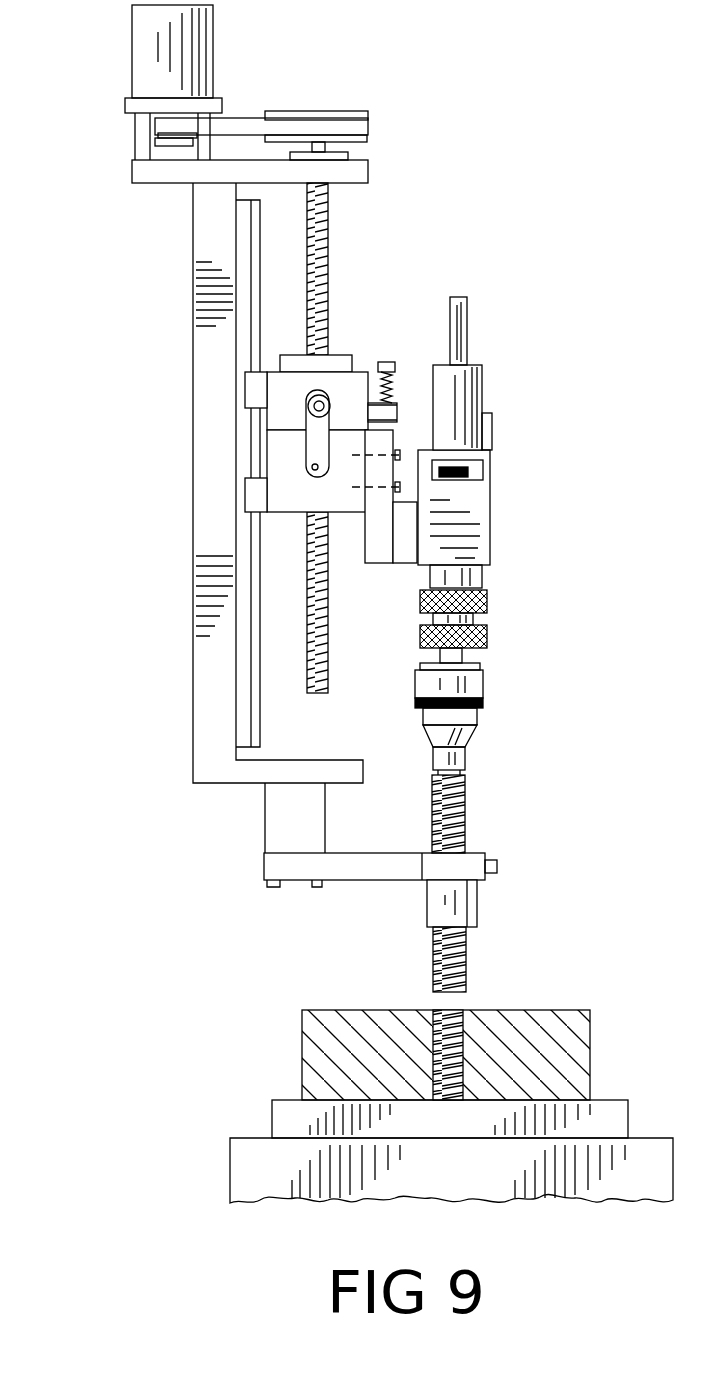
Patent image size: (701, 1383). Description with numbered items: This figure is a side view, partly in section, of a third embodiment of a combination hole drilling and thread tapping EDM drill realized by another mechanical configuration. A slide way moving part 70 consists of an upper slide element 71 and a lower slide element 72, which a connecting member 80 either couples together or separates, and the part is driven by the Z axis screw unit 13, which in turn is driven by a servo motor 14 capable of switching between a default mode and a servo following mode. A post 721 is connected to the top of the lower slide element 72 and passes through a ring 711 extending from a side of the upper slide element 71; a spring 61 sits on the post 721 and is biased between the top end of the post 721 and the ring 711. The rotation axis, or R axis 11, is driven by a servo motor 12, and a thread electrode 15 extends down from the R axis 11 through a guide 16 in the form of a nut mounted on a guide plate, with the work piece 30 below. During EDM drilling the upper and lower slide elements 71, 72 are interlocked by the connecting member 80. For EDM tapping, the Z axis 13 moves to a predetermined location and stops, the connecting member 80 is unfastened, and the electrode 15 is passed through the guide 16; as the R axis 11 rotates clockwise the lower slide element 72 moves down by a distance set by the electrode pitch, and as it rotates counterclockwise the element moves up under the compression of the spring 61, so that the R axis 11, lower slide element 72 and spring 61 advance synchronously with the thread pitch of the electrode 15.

The rotation axis 11 is at (455, 655).
The servo motor 12 is at (487, 431).
The machining axis 13 is at (330, 233).
The servo motor 14 is at (190, 55).
The thread electrode 15 is at (462, 807).
The guide 16 is at (460, 900).
The workpiece 30 is at (557, 1027).
The spring 61 is at (398, 393).
The slide way moving part 70 is at (226, 387).
The upper slide element 71 is at (280, 402).
The lower slide element 72 is at (277, 502).
The connecting member 80 is at (310, 440).
The ring 711 is at (397, 408).
The post 721 is at (385, 362).